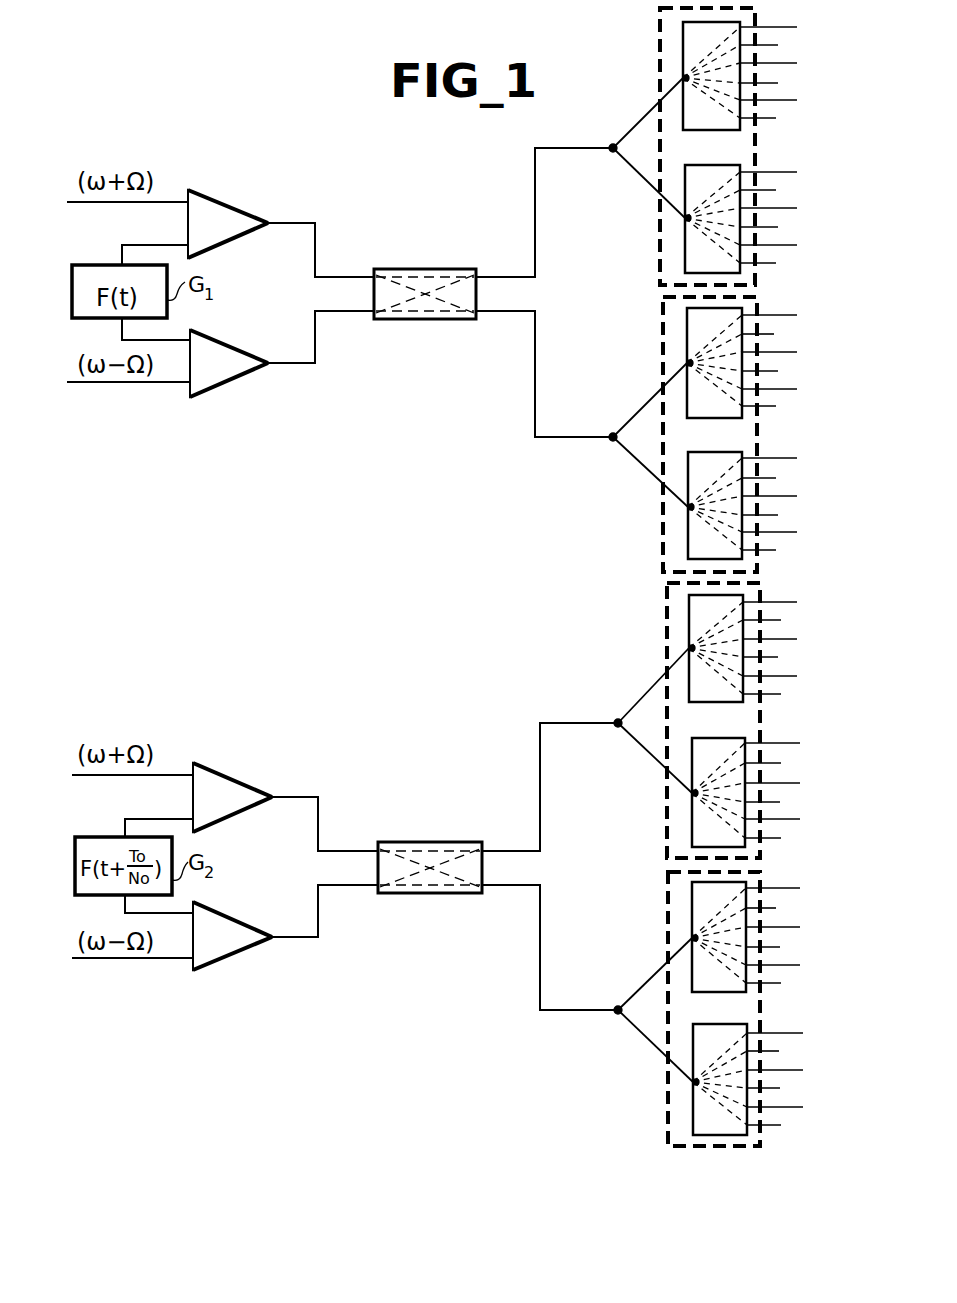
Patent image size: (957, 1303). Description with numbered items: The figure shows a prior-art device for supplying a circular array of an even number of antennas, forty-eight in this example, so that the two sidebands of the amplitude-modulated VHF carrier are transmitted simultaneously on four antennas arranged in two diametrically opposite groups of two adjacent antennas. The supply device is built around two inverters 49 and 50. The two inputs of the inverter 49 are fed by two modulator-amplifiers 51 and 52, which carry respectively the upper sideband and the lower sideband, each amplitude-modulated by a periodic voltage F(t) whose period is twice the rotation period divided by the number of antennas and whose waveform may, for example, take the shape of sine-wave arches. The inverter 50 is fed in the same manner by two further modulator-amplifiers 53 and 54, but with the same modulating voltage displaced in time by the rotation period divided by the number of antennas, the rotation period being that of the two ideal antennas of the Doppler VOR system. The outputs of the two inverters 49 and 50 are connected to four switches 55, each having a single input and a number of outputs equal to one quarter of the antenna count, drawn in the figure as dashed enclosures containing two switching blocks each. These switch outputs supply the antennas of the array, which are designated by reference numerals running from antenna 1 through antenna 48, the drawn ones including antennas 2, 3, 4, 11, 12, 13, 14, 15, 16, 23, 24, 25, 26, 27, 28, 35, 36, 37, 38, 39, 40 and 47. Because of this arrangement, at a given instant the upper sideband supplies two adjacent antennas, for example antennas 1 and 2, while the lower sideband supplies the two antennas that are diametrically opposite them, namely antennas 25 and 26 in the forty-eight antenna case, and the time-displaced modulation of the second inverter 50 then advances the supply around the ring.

The antenna 1 is at (758, 644).
The antenna 2 is at (751, 70).
The antenna 3 is at (772, 621).
The antenna 4 is at (769, 46).
The antenna 11 is at (780, 696).
The antenna 12 is at (776, 119).
The antenna 13 is at (765, 789).
The antenna 14 is at (761, 213).
The antenna 15 is at (781, 766).
The antenna 16 is at (776, 191).
The antenna 23 is at (781, 841).
The antenna 24 is at (776, 263).
The antenna 25 is at (765, 934).
The antenna 26 is at (761, 359).
The antenna 27 is at (779, 911).
The antenna 28 is at (776, 336).
The antenna 35 is at (782, 983).
The antenna 36 is at (777, 411).
The antenna 37 is at (767, 1078).
The antenna 38 is at (762, 500).
The antenna 39 is at (781, 1053).
The antenna 40 is at (777, 481).
The antenna 47 is at (782, 1126).
The antenna 48 is at (777, 551).
The inverter 49 is at (410, 268).
The inverter 50 is at (416, 840).
The modulator-amplifier 51 is at (237, 178).
The modulator-amplifier 52 is at (244, 381).
The modulator-amplifier 53 is at (240, 752).
The modulator-amplifier 54 is at (245, 955).
The switch 55 is at (660, 245).